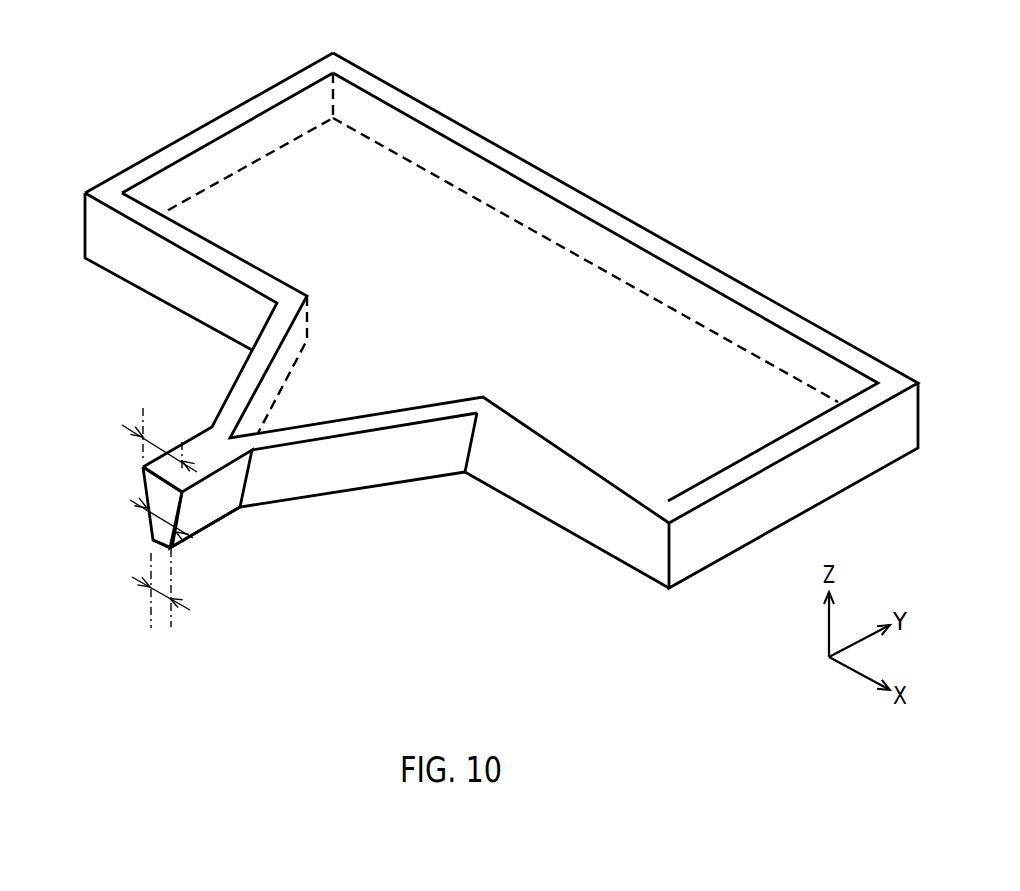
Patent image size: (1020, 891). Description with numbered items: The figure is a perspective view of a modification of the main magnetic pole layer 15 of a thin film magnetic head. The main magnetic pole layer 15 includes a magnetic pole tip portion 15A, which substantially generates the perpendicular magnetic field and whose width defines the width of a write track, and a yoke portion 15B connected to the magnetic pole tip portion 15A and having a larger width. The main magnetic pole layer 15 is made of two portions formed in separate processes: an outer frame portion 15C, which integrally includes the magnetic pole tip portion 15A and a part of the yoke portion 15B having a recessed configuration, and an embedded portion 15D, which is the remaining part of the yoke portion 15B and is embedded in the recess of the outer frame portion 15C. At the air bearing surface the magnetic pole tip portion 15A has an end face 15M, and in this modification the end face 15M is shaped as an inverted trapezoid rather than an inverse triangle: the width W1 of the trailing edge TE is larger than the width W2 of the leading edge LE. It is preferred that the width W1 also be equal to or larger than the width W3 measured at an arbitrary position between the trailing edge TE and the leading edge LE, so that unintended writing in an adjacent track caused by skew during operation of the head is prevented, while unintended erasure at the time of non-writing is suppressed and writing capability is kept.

The main magnetic pole layer 15 is at (479, 346).
The magnetic pole tip portion 15A is at (208, 496).
The yoke portion 15B is at (355, 462).
The outer frame portion 15C is at (202, 138).
The embedded portion 15D is at (293, 183).
The end face 15M is at (157, 491).
The width of the trailing edge W1 is at (167, 457).
The width of the leading edge W2 is at (167, 610).
The width of an arbitrary position W3 is at (160, 524).
The leading edge LE is at (157, 547).
The trailing edge TE is at (172, 489).